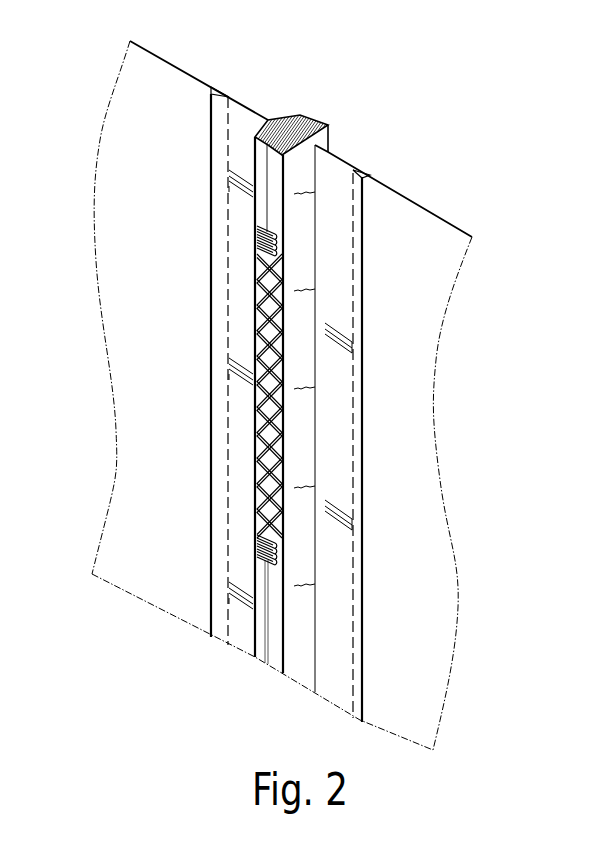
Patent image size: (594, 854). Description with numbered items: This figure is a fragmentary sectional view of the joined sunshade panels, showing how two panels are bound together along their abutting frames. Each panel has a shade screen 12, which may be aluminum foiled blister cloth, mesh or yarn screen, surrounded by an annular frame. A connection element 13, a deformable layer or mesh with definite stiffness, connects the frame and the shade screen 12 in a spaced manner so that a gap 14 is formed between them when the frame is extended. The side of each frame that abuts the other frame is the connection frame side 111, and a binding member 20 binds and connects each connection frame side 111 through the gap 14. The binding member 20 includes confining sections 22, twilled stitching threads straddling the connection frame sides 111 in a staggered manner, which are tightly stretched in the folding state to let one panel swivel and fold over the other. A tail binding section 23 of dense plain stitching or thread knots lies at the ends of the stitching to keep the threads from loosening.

The shade screen 12 is at (443, 236).
The connection element 13 is at (252, 120).
The gap 14 is at (278, 115).
The connection frame side 111 is at (308, 127).
The binding member 20 is at (216, 448).
The confining sections 22 is at (253, 273).
The tail binding section 23 is at (255, 553).